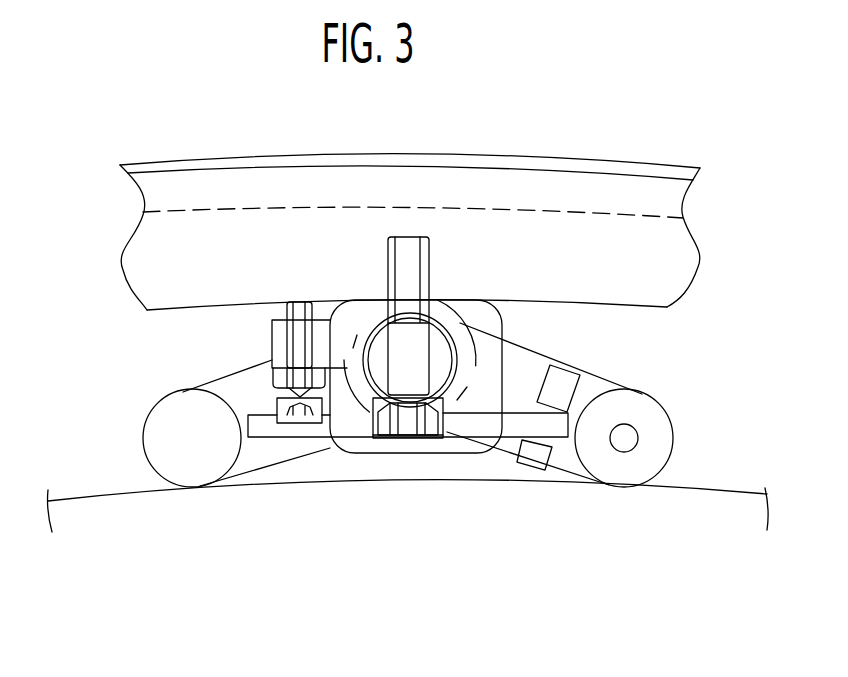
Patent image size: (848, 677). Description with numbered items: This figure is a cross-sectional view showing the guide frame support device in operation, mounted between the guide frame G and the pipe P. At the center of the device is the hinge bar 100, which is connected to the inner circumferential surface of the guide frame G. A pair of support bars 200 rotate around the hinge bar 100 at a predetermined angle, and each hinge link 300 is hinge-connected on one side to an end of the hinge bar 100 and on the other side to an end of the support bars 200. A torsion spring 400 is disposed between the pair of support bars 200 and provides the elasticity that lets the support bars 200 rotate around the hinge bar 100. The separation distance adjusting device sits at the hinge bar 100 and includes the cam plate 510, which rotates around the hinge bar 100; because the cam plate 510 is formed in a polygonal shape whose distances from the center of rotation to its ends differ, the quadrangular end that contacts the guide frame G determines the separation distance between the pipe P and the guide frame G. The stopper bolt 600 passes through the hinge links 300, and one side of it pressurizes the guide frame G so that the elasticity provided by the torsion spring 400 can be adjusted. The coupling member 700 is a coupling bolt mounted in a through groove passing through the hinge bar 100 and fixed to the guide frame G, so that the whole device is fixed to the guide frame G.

The guide frame G is at (333, 228).
The pipe P is at (103, 515).
The hinge bar 100 is at (435, 357).
The support bar 200 is at (195, 463).
The hinge link 300 is at (508, 445).
The torsion spring 400 is at (538, 427).
The cam plate 510 is at (490, 327).
The stopper bolt 600 is at (293, 303).
The coupling member 700 is at (415, 237).